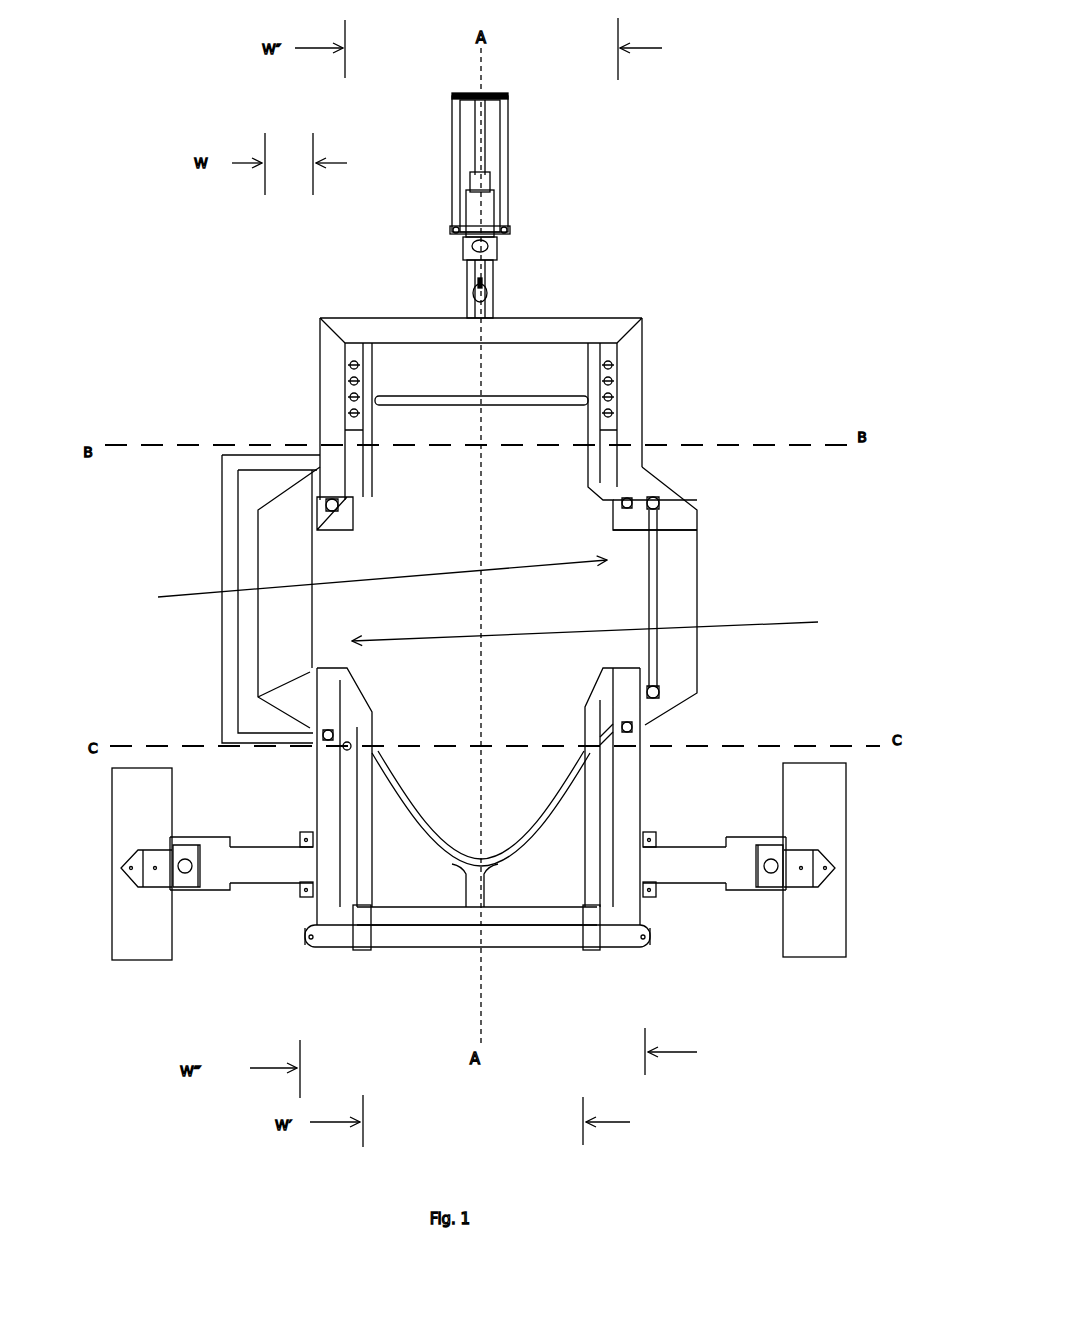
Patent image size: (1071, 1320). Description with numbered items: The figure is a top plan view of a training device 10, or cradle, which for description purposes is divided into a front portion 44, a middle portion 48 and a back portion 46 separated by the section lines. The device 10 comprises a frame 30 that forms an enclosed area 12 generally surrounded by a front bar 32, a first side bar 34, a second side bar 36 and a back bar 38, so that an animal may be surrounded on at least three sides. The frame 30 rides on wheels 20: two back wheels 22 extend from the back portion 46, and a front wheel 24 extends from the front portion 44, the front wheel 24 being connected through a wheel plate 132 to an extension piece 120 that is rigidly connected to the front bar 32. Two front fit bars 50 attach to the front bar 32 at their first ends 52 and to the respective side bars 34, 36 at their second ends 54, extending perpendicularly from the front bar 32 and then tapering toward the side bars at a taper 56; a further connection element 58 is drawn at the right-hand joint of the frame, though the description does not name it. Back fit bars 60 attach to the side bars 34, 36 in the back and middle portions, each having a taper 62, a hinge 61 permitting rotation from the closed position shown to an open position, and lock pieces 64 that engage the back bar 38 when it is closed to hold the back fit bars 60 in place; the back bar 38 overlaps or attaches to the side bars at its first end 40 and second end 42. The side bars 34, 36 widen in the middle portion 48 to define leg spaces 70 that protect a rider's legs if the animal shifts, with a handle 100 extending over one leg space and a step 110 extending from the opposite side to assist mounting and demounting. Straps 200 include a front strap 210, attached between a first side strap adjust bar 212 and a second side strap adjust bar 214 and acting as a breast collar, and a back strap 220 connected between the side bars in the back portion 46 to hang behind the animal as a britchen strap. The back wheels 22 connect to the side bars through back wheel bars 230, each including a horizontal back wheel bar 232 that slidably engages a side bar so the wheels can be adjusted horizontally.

The training device 10 is at (253, 283).
The enclosed area 12 is at (522, 817).
The wheels 20 is at (479, 575).
The back wheels 22 is at (86, 932).
The front wheel 24 is at (429, 149).
The frame 30 is at (487, 591).
The front bar 32 is at (578, 328).
The first side bar 34 is at (328, 360).
The second side bar 36 is at (646, 328).
The back bar 38 is at (540, 950).
The first end of back bar 40 is at (307, 950).
The second end of back bar 42 is at (644, 948).
The front portion 44 is at (255, 313).
The back portion 46 is at (195, 800).
The middle portion 48 is at (733, 596).
The front fit bars 50 is at (348, 440).
The first ends of front fit bars 52 is at (477, 336).
The second ends of front fit bars 54 is at (335, 500).
The taper 56 is at (345, 520).
The pivot bolt 58 is at (655, 535).
The back fit bars 60 is at (360, 787).
The hinge 61 is at (355, 715).
The taper 62 is at (595, 345).
The lock pieces 64 is at (660, 497).
The leg spaces 70 is at (485, 600).
The handle 100 is at (653, 556).
The step 110 is at (235, 497).
The extension piece 120 is at (461, 290).
The wheel plate 132 is at (509, 155).
The straps 200 is at (519, 385).
The front strap 210 is at (428, 396).
The first side strap adjust bar 212 is at (345, 415).
The second side strap adjust bar 214 is at (618, 415).
The back strap 220 is at (393, 835).
The back wheel bars 230 is at (266, 838).
The horizontal back wheel bar 232 is at (252, 868).